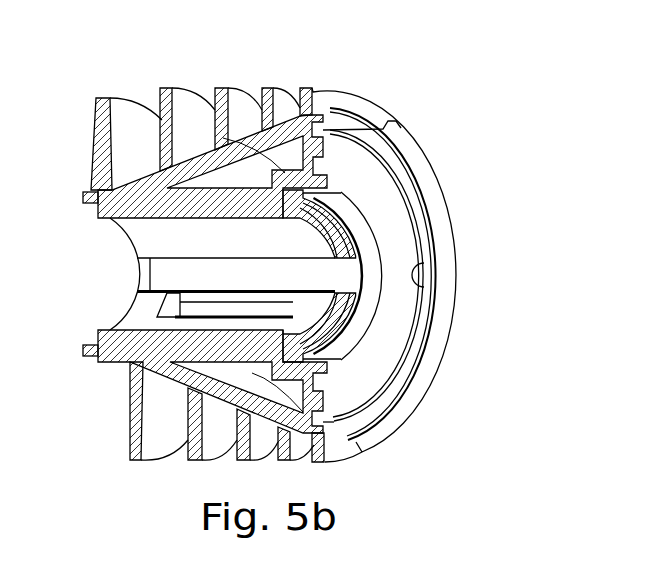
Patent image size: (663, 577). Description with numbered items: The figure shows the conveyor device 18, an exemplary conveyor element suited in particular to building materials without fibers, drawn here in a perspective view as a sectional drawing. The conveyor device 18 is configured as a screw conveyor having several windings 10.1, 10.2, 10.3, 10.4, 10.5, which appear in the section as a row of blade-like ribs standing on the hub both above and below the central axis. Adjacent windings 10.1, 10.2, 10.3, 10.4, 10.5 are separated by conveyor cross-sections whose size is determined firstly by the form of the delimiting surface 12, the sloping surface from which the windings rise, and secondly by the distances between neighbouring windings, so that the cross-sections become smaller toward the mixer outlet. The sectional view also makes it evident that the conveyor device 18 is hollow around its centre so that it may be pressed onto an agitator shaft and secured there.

The winding 10.1 is at (100, 98).
The winding 10.2 is at (165, 88).
The winding 10.3 is at (221, 88).
The winding 10.4 is at (267, 88).
The winding 10.5 is at (308, 88).
The delimiting surface 12 is at (183, 157).
The conveyor device 18 is at (466, 106).